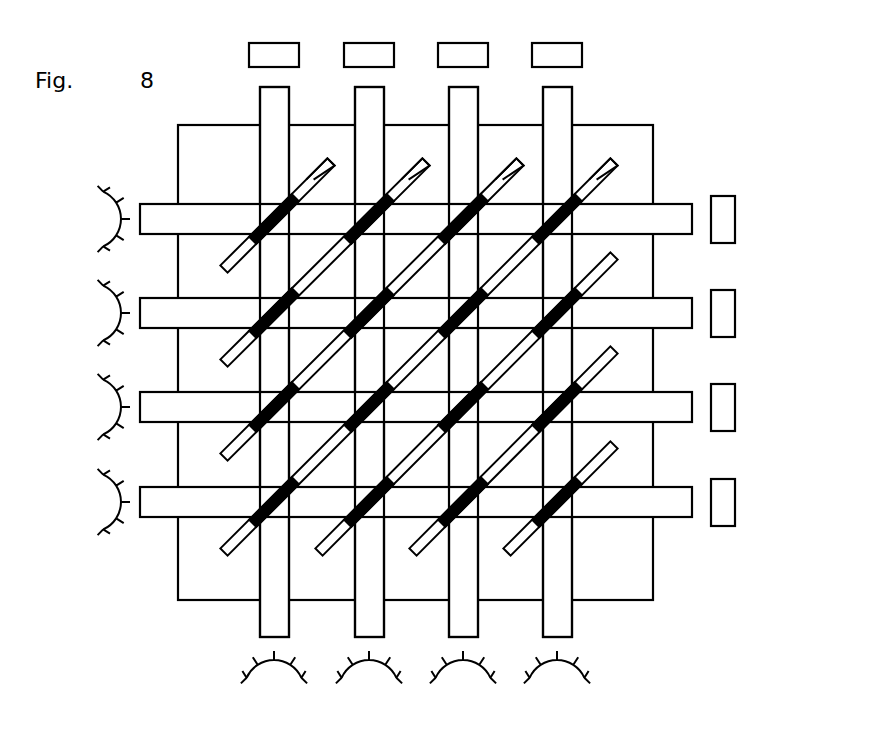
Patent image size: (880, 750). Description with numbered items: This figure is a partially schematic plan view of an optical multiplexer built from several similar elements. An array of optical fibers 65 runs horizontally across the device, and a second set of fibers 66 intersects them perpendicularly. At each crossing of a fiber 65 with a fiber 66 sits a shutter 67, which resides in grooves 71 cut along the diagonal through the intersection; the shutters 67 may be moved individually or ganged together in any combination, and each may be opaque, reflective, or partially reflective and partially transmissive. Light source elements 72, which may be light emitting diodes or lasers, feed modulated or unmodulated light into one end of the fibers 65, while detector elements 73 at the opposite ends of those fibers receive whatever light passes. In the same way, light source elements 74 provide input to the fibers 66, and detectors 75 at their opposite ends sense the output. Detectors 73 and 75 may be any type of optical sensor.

The optical fibers 65 is at (678, 205).
The fibers 66 is at (430, 362).
The shutter 67 is at (267, 211).
The grooves 71 is at (319, 171).
The light source elements 72 is at (103, 213).
The detector elements 73 is at (736, 213).
The light source elements 74 is at (277, 662).
The detectors 75 is at (275, 45).